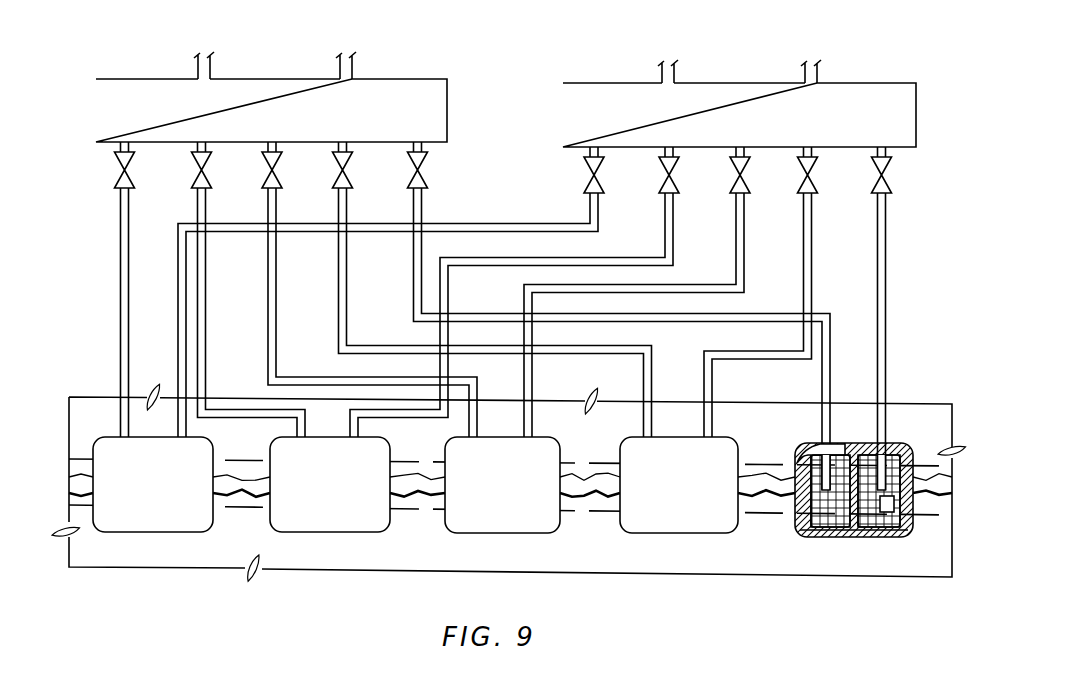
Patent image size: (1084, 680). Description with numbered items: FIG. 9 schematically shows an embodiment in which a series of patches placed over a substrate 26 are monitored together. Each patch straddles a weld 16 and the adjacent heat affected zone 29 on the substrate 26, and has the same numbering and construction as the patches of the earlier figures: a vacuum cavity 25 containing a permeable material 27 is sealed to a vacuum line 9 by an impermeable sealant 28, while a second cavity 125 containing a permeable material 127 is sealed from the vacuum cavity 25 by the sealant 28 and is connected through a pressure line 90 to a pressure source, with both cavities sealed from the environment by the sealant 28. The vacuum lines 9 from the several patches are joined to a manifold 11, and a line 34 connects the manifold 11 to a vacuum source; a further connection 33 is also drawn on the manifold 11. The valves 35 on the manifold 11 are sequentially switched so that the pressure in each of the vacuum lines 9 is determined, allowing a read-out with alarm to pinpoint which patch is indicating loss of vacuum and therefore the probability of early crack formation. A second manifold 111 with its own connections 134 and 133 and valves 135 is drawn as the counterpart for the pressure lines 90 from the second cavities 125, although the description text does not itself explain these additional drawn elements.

The manifold 11 is at (288, 122).
The second manifold 111 is at (762, 127).
The vacuum source line 34 is at (212, 57).
The manifold inlet connection 33 is at (350, 57).
The second manifold inlet connection 134 is at (670, 65).
The second manifold inlet connection 133 is at (812, 65).
The valve 35 is at (427, 175).
The valve 135 is at (891, 180).
The vacuum line 9 is at (822, 401).
The pressure line 90 is at (886, 402).
The substrate 26 is at (430, 560).
The weld 16 is at (782, 503).
The impermeable sealant 28 is at (815, 447).
The heat affected zone 29 is at (790, 465).
The permeable material 27 is at (805, 537).
The vacuum cavity 25 is at (840, 522).
The permeable material 127 is at (892, 520).
The second cavity 125 is at (888, 510).